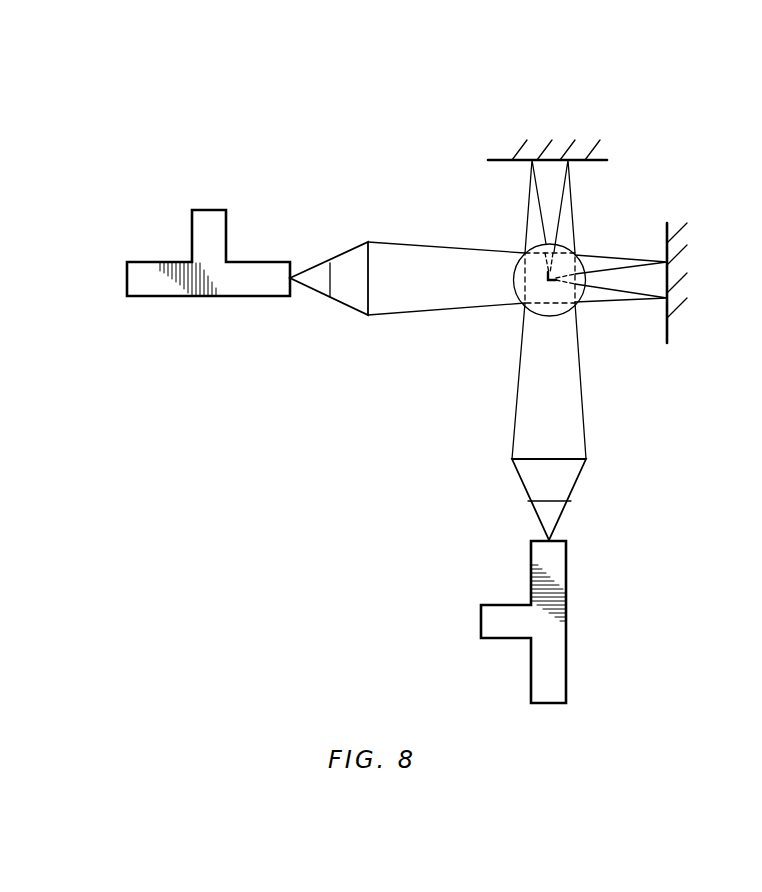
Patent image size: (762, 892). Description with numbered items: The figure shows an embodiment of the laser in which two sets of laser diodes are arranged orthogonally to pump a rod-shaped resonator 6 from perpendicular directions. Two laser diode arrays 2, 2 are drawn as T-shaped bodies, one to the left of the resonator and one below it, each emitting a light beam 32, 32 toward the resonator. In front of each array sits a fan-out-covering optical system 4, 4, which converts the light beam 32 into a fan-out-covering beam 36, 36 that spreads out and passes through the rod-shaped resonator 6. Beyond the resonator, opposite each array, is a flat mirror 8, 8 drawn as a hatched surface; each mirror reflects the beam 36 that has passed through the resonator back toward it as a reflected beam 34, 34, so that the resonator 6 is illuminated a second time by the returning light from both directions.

The laser diode array 2 is at (207, 215).
The fan-out-covering optical system 4 is at (345, 256).
The rod-shaped resonator 6 is at (586, 240).
The flat mirror 8 is at (626, 131).
The light beam 32 is at (316, 290).
The reflected beam 34 is at (545, 203).
The fan-out-covering beam 36 is at (420, 258).